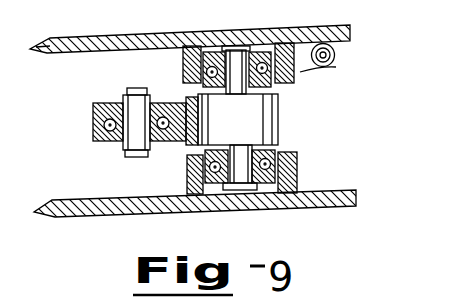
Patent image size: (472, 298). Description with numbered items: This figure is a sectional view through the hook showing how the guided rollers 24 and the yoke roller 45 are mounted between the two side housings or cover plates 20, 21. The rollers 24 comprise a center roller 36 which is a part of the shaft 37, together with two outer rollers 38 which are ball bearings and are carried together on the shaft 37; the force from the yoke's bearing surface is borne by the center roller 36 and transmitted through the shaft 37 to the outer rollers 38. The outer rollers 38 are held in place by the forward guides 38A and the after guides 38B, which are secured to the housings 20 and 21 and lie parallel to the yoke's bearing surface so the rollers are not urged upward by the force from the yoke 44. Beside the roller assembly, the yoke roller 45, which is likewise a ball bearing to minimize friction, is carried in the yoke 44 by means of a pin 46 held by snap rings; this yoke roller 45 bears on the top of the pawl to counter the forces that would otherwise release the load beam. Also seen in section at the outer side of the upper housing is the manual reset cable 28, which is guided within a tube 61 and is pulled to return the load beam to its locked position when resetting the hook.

The side housing 20 is at (174, 216).
The side housing 21 is at (190, 30).
The guided rollers 24 is at (253, 126).
The manual reset cable 28 is at (336, 54).
The center roller 36 is at (279, 123).
The shaft 37 is at (264, 200).
The outer rollers 38 is at (268, 28).
The forward guides 38A is at (289, 75).
The after guides 38B is at (187, 186).
The yoke 44 is at (122, 150).
The yoke roller 45 is at (93, 130).
The pin 46 is at (127, 92).
The tube 61 is at (336, 67).